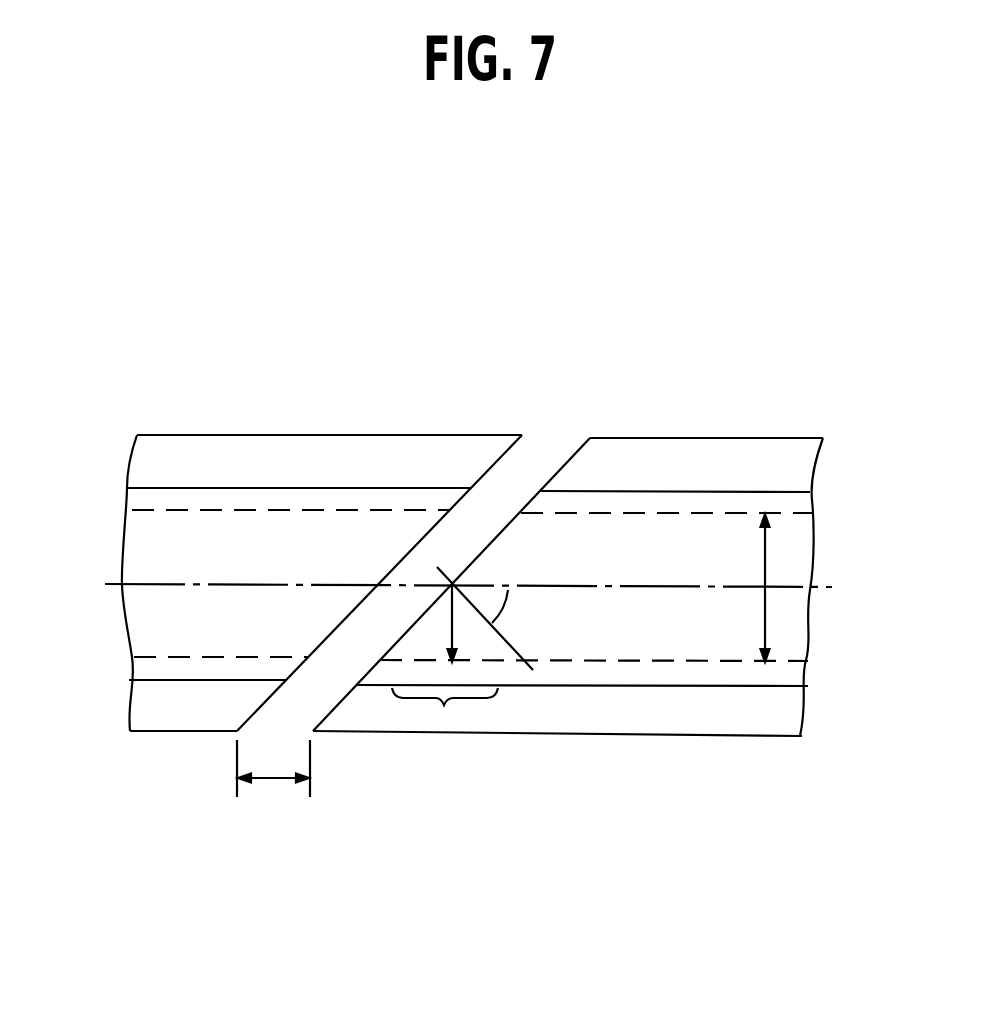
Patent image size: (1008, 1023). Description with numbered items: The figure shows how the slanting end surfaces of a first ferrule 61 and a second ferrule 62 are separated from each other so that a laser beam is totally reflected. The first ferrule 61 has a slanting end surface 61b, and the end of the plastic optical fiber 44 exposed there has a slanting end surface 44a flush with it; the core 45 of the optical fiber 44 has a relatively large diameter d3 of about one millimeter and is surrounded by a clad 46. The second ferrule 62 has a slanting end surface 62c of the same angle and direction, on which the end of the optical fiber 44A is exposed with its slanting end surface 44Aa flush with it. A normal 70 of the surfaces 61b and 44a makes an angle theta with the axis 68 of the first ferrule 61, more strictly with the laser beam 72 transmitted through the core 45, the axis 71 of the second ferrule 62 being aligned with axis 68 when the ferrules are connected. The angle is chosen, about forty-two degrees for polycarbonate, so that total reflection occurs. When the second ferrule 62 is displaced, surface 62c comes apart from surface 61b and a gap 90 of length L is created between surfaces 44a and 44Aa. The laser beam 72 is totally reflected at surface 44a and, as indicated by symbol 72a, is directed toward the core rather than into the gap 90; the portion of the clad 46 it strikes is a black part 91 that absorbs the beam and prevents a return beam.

The second ferrule 62 is at (191, 434).
The first ferrule 61 is at (802, 436).
The optical fiber 44A is at (257, 488).
The slanting end surface 44Aa is at (430, 543).
The slanting end surface 62c is at (490, 473).
The slanting end surface 44a is at (478, 553).
The slanting end surface 61b is at (592, 446).
The axis 71 is at (685, 582).
The axis 68 is at (155, 584).
The laser beam 72 is at (500, 586).
The normal 70 is at (503, 645).
The reflected light beam direction 72a is at (455, 638).
The gap 90 is at (357, 647).
The black part 91 is at (445, 705).
The clad 46 is at (570, 673).
The optical fiber 44 is at (730, 700).
The core 45 is at (790, 623).
The diameter of core d3 is at (768, 582).
The gap length L is at (273, 782).